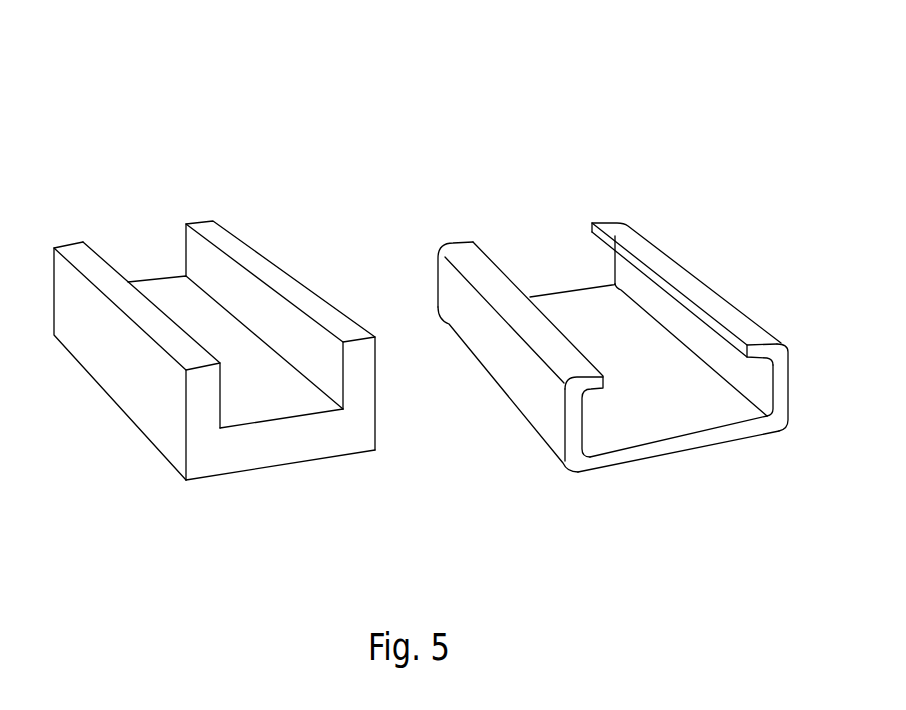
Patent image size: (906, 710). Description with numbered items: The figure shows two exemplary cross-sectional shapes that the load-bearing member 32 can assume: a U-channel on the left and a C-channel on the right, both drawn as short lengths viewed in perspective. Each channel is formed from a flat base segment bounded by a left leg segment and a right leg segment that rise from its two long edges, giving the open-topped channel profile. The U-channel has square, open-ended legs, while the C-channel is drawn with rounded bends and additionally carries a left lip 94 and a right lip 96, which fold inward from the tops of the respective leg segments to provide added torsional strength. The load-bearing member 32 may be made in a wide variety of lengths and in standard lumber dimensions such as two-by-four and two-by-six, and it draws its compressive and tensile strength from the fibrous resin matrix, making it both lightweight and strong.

The channel member 32 is at (168, 125).
The left lip 94 is at (472, 262).
The right lip 96 is at (613, 233).